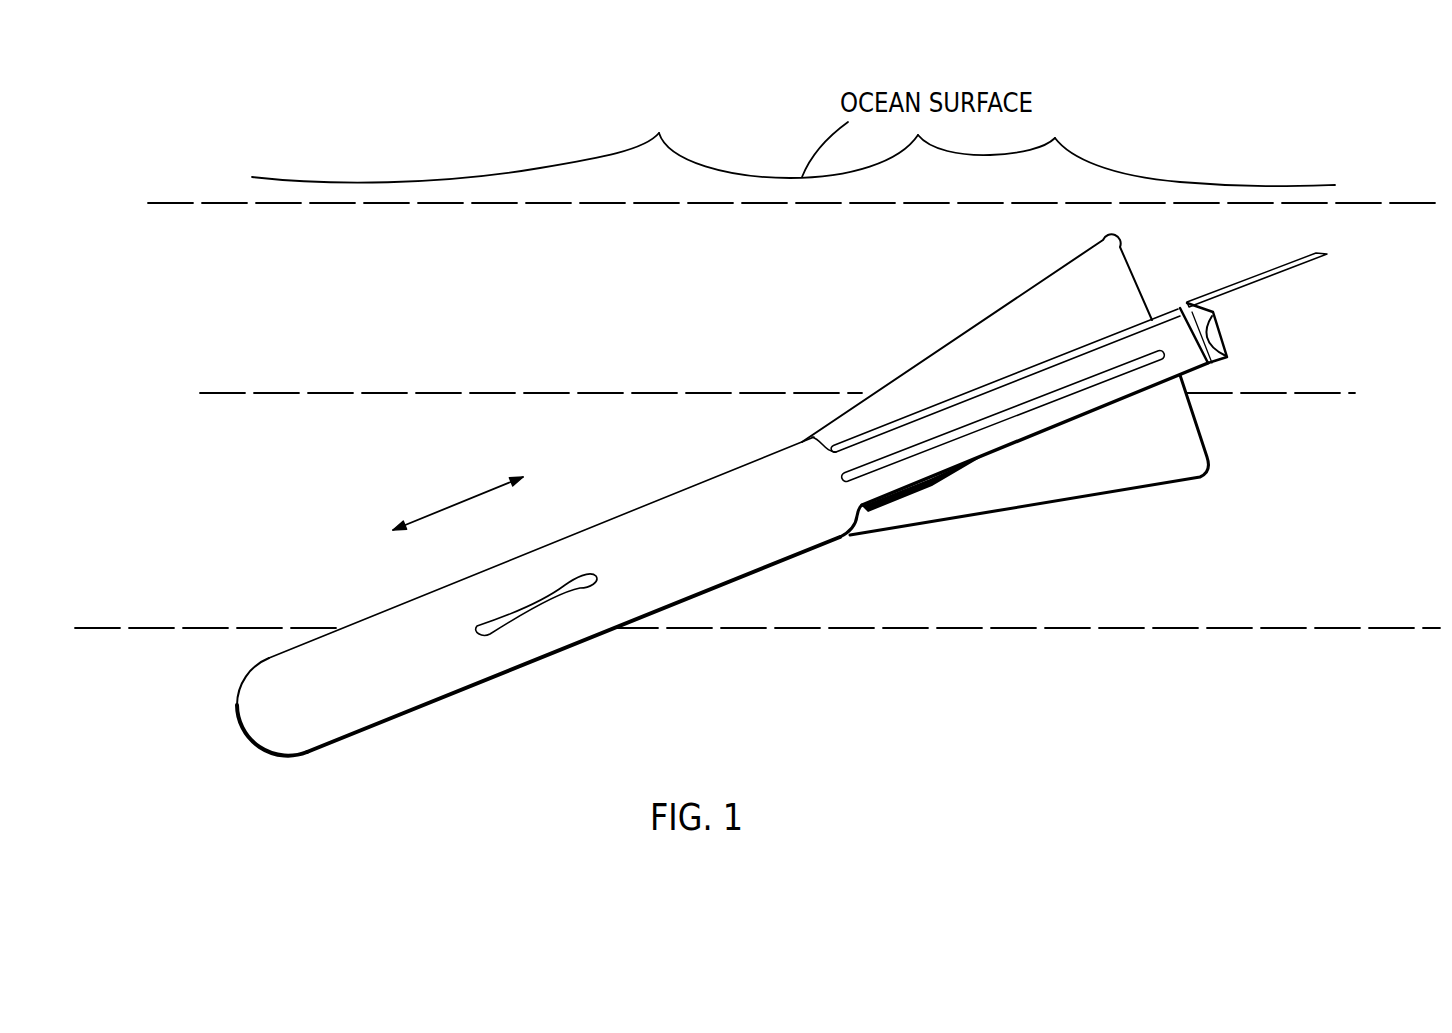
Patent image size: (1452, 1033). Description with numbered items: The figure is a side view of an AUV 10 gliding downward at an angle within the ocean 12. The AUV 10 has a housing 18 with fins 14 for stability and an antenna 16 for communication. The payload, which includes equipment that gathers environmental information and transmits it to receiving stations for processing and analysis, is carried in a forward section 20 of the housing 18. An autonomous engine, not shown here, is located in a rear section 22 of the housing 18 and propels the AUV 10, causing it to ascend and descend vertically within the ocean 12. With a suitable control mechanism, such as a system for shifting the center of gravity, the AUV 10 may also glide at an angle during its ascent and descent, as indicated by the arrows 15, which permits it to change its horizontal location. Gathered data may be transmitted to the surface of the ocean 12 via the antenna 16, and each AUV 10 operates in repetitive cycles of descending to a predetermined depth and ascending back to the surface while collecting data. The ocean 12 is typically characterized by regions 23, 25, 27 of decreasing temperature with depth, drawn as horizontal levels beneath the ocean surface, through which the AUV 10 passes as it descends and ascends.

The AUV 10 is at (660, 663).
The ocean 12 is at (1300, 743).
The fins 14 is at (575, 590).
The arrows 15 is at (455, 502).
The antenna 16 is at (1283, 272).
The housing 18 is at (638, 525).
The forward section 20 is at (354, 718).
The rear section 22 is at (1006, 418).
The region 23 is at (226, 203).
The region 25 is at (302, 393).
The region 27 is at (217, 628).